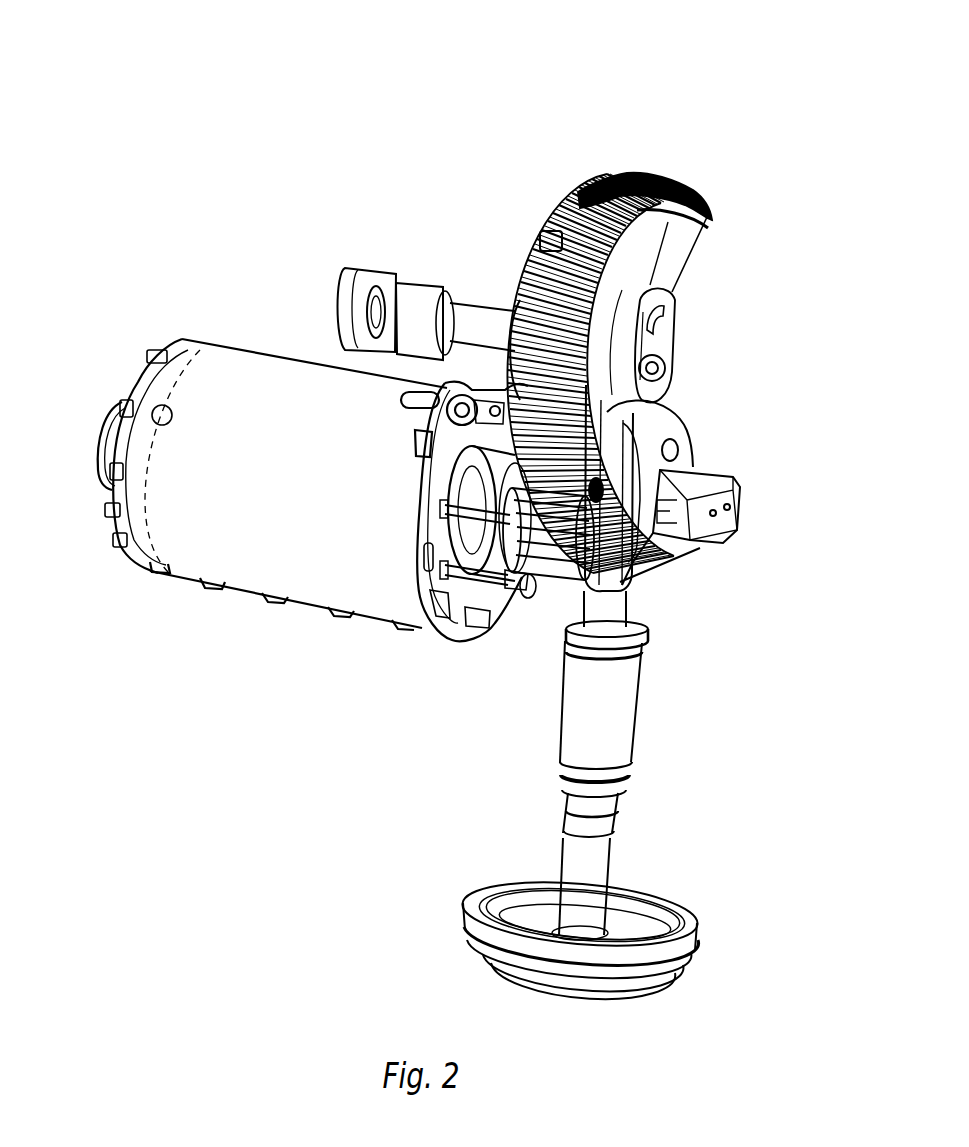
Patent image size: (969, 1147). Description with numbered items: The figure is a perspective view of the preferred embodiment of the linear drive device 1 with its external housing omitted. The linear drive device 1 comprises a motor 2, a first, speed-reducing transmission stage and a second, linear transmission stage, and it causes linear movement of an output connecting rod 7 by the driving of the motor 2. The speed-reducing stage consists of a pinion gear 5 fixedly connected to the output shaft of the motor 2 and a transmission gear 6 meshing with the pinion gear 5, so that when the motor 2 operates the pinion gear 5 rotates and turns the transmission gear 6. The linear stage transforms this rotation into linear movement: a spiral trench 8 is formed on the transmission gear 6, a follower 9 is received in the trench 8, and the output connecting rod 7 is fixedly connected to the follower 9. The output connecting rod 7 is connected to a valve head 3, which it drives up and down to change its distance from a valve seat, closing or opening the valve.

The linear drive device 1 is at (530, 120).
The motor 2 is at (250, 420).
The valve head 3 is at (576, 965).
The pinion gear 5 is at (535, 568).
The transmission gear 6 is at (713, 178).
The output connecting rod 7 is at (605, 612).
The spiral trench 8 is at (645, 247).
The follower 9 is at (615, 425).